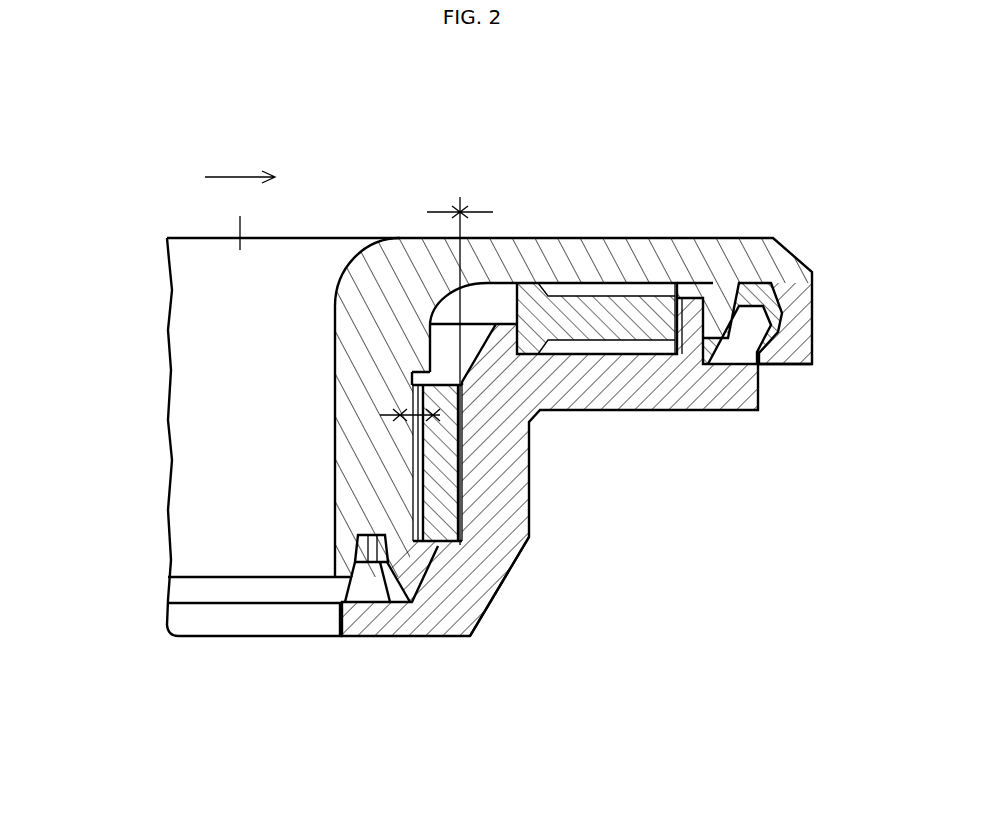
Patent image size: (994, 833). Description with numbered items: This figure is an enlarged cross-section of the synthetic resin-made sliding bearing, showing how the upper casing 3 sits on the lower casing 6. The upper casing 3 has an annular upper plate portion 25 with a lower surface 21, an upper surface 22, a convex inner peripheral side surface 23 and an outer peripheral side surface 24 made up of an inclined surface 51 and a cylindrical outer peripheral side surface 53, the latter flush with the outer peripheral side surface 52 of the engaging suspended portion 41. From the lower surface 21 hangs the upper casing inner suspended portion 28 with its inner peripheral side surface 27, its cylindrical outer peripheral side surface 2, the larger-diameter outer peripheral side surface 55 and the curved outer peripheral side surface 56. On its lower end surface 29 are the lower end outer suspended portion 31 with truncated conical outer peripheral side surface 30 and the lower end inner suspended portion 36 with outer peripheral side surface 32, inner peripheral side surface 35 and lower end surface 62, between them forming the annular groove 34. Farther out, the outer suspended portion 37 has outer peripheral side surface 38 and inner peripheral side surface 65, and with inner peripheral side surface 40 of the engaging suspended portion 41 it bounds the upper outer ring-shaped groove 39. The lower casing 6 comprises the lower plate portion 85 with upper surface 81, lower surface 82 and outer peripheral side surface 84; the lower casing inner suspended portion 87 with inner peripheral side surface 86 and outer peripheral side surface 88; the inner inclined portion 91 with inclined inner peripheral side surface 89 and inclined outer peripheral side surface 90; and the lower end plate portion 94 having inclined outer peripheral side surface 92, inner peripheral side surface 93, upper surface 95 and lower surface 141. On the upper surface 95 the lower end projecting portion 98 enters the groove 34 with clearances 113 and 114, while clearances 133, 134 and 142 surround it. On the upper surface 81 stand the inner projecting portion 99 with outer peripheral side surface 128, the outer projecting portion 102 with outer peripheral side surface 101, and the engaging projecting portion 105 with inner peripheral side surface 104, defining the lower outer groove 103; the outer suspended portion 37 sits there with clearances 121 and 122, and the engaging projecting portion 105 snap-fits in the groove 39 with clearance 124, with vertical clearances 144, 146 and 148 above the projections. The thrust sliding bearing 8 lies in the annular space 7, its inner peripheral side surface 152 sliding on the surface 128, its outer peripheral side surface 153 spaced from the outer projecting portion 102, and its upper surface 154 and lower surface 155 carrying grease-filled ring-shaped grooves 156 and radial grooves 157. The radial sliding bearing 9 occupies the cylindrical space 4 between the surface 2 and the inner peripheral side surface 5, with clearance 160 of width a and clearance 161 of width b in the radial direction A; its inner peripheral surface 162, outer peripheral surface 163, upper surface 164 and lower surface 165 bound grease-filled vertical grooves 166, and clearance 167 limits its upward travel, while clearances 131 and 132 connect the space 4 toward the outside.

The cylindrical outer peripheral side surface 2 is at (490, 490).
The upper casing 3 is at (636, 223).
The cylindrical space 4 is at (421, 380).
The cylindrical inner peripheral side surface 5 is at (440, 470).
The lower casing 6 is at (508, 565).
The annular space 7 is at (511, 308).
The thrust sliding bearing 8 is at (622, 278).
The radial sliding bearing 9 is at (397, 483).
The annular lower surface 21 is at (603, 300).
The annular upper surface 22 is at (191, 237).
The inner peripheral side surface 23 is at (239, 222).
The outer peripheral side surface 24 is at (812, 262).
The annular upper plate portion 25 is at (730, 320).
The cylindrical inner peripheral side surface 27 is at (227, 425).
The upper casing inner suspended portion 28 is at (357, 432).
The annular lower end surface 29 is at (388, 603).
The truncated conical surface-shaped outer peripheral side surface 30 is at (445, 628).
The lower end outer suspended portion 31 is at (400, 612).
The truncated conical surface-shaped outer peripheral side surface 32 is at (353, 526).
The circular annular groove 34 is at (393, 605).
The cylindrical inner peripheral side surface 35 is at (262, 605).
The lower end inner suspended portion 36 is at (290, 635).
The outer suspended portion 37 is at (752, 283).
The truncated conical surface-shaped outer peripheral side surface 38 is at (775, 285).
The annular upper outer ring-shaped groove 39 is at (780, 312).
The inner peripheral side surface 40 is at (775, 332).
The annular engaging suspended portion 41 is at (770, 365).
The inclined surface 51 is at (795, 257).
The cylindrical outer peripheral side surface 52 is at (812, 360).
The cylindrical outer peripheral side surface 53 is at (812, 290).
The outer peripheral side surface 55 is at (428, 372).
The curved outer peripheral side surface 56 is at (432, 330).
The annular lower end surface 62 is at (183, 612).
The truncated conical surface-shaped inner peripheral side surface 65 is at (718, 300).
The annular upper surface 81 is at (660, 345).
The annular lower surface 82 is at (713, 340).
The cylindrical outer peripheral side surface 84 is at (735, 345).
The annular lower plate portion 85 is at (640, 352).
The cylindrical inner peripheral side surface 86 is at (525, 430).
The lower casing inner suspended portion 87 is at (500, 450).
The cylindrical outer peripheral side surface 88 is at (500, 520).
The inclined inner peripheral side surface 89 is at (430, 627).
The inclined outer peripheral side surface 90 is at (520, 560).
The lower casing inner inclined portion 91 is at (480, 615).
The inclined outer peripheral side surface 92 is at (465, 620).
The cylindrical inner peripheral side surface 93 is at (198, 625).
The annular lower end plate portion 94 is at (420, 627).
The annular upper surface 95 is at (225, 605).
The lower end projecting portion 98 is at (366, 565).
The inner projecting portion 99 is at (503, 300).
The truncated conical surface-shaped outer peripheral side surface 101 is at (690, 290).
The outer projecting portion 102 is at (700, 355).
The annular lower outer groove 103 is at (745, 365).
The truncated conical surface-shaped inner peripheral side surface 104 is at (745, 300).
The engaging projecting portion 105 is at (760, 362).
The lower end outer clearance 113 is at (415, 612).
The lower end inner clearance 114 is at (348, 612).
The clearance 121 is at (740, 370).
The clearance 122 is at (762, 400).
The clearance 124 is at (762, 375).
The cylindrical outer peripheral side surface 128 is at (563, 283).
The annular clearance 131 is at (540, 420).
The annular clearance 132 is at (480, 600).
The annular clearance 133 is at (420, 620).
The annular clearance 134 is at (322, 605).
The annular lower surface 141 is at (240, 635).
The annular clearance 142 is at (347, 505).
The annular clearance 144 is at (507, 305).
The annular clearance 146 is at (672, 296).
The annular clearance 148 is at (770, 300).
The cylindrical inner peripheral side surface 152 is at (515, 310).
The cylindrical outer peripheral side surface 153 is at (680, 355).
The annular upper surface 154 is at (597, 283).
The annular lower surface 155 is at (620, 330).
The ring-shaped grooves 156 is at (522, 312).
The radial grooves 157 is at (560, 300).
The cylindrical clearance 160 is at (425, 396).
The cylindrical clearance 161 is at (470, 470).
The inner peripheral surface 162 is at (413, 410).
The outer peripheral surface 163 is at (475, 500).
The circular annular upper surface 164 is at (415, 371).
The circular annular lower surface 165 is at (470, 530).
The vertical grooves 166 is at (420, 460).
The clearance 167 is at (336, 330).
The width a is at (395, 413).
The width b is at (458, 196).
The radial direction A is at (240, 164).